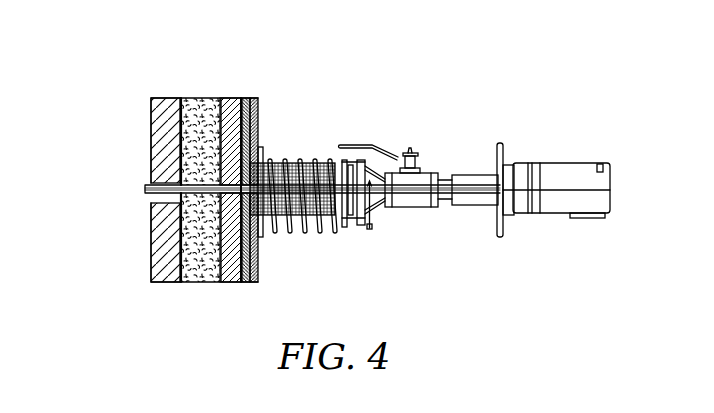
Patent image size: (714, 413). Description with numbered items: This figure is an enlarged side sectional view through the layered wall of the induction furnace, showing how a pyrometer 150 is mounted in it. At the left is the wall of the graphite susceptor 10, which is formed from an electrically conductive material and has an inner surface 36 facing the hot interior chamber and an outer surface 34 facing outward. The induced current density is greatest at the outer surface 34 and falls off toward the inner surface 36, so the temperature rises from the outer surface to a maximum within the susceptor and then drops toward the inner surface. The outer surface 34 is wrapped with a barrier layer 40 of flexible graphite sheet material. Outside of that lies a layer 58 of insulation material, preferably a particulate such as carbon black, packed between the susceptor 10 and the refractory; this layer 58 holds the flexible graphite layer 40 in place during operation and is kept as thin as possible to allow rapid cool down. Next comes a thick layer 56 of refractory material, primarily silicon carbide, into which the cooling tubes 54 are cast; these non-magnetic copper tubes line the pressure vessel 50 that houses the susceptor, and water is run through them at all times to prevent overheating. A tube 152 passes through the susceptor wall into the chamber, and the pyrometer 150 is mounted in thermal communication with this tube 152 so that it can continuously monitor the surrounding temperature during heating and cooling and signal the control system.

The susceptor 10 is at (157, 97).
The inner surface 36 is at (150, 136).
The barrier layer 40 is at (181, 97).
The outer surface 34 is at (180, 236).
The layer of insulation material 58 is at (198, 283).
The layer of refractory material 56 is at (232, 285).
The cooling tubes 54 is at (243, 97).
The pressure vessel 50 is at (251, 97).
The tube 152 is at (150, 188).
The pyrometer 150 is at (550, 213).